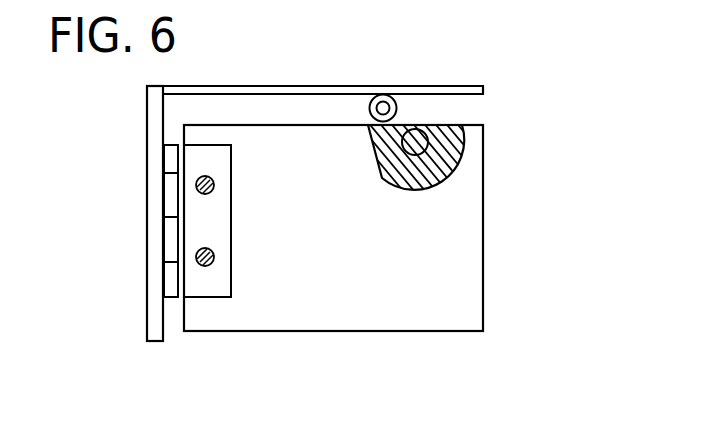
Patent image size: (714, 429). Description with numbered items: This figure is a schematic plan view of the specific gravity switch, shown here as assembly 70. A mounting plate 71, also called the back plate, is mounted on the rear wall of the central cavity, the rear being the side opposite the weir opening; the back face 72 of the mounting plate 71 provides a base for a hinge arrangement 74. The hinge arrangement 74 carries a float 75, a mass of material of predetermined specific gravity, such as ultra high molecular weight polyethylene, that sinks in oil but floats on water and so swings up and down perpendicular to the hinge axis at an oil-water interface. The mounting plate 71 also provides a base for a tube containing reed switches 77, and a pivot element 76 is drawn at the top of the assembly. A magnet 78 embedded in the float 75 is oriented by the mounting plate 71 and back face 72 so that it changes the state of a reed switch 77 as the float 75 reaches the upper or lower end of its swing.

The hinge assembly 70 is at (510, 141).
The mounting plate 71 is at (237, 86).
The back face 72 is at (147, 128).
The hinge arrangement 74 is at (172, 227).
The float 75 is at (463, 224).
The pivot pin 76 is at (398, 110).
The reed switch 77 is at (371, 101).
The magnet 78 is at (392, 153).